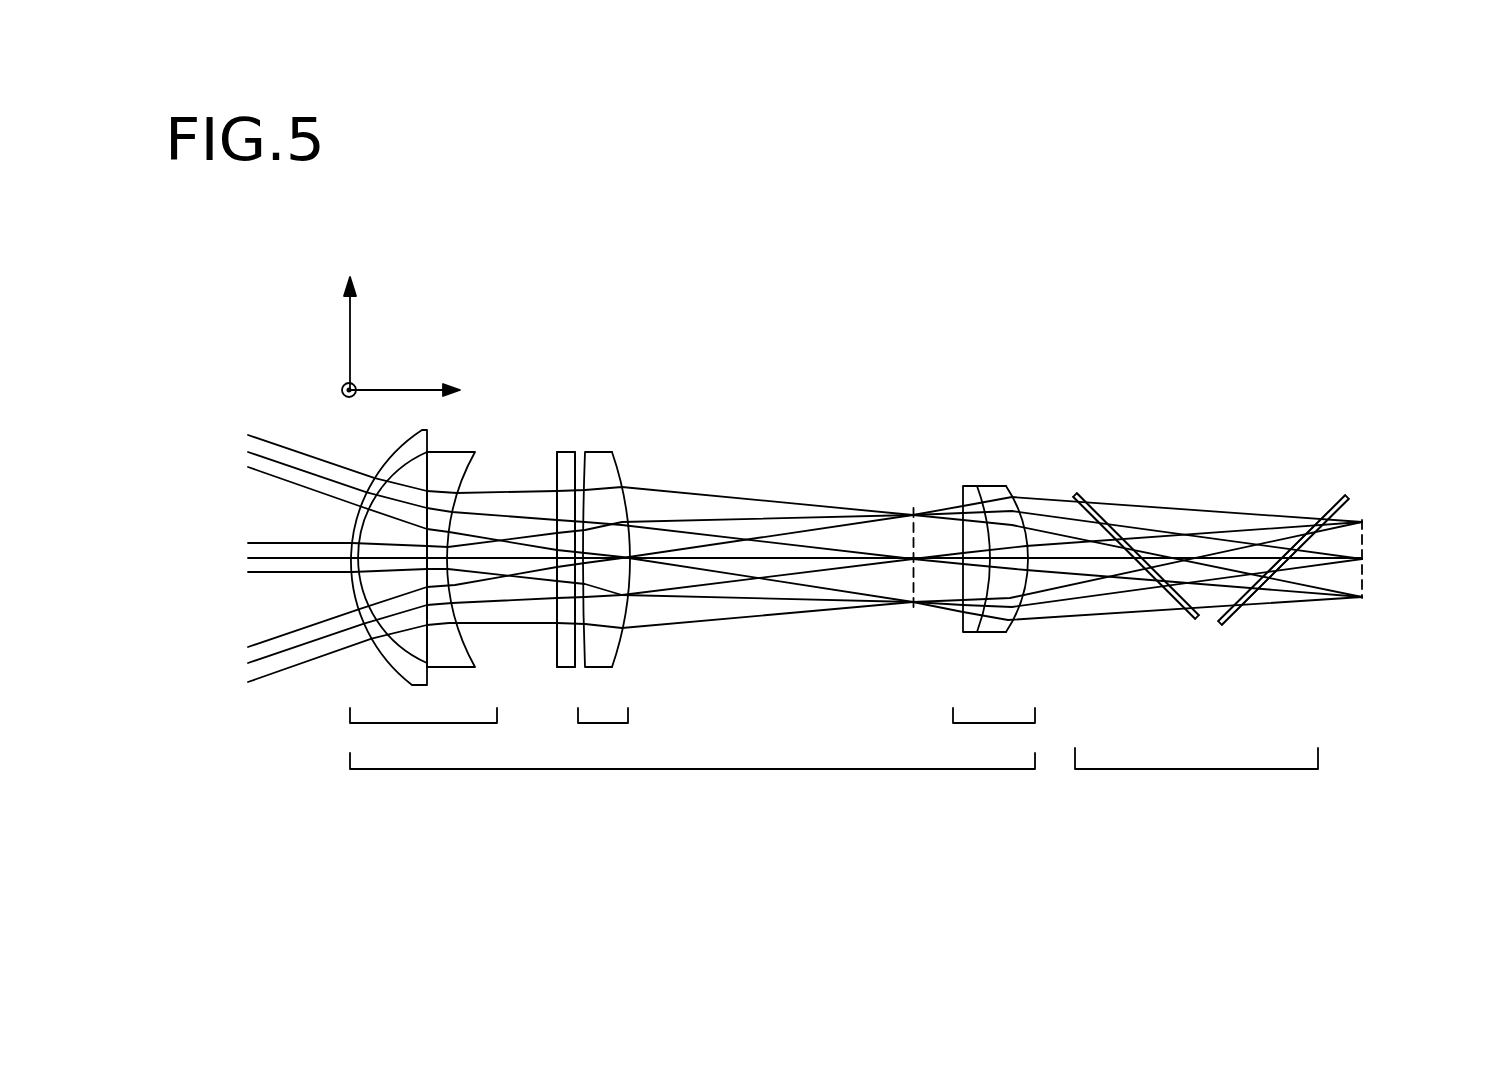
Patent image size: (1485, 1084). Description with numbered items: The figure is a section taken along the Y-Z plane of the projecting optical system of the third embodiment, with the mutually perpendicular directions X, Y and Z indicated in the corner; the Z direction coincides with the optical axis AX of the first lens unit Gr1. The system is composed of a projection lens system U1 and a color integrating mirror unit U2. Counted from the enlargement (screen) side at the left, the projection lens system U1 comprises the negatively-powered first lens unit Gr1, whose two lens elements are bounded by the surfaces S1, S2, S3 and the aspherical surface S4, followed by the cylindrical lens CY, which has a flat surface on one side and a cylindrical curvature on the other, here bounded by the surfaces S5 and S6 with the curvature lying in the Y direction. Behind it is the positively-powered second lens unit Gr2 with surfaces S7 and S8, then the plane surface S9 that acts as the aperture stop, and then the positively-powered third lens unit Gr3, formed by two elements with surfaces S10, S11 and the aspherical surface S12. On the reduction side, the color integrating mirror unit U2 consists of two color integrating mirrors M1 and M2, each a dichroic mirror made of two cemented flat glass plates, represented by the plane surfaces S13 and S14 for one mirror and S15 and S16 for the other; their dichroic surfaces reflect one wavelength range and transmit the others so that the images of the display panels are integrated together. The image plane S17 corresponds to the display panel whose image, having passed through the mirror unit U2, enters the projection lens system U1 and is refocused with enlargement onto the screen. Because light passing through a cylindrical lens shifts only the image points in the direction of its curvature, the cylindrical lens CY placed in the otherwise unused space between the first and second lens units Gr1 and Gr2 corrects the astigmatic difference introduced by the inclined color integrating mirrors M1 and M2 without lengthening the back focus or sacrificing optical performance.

The first surface S1 is at (393, 452).
The second surface S2 is at (433, 415).
The third surface S3 is at (430, 470).
The fourth surface (aspherical) S4 is at (462, 489).
The fifth surface S5 is at (556, 470).
The sixth surface S6 is at (578, 462).
The seventh surface S7 is at (590, 465).
The eighth surface S8 is at (619, 473).
The ninth surface (aperture stop) S9 is at (913, 610).
The tenth surface S10 is at (962, 500).
The eleventh surface S11 is at (980, 487).
The twelfth surface (aspherical) S12 is at (1010, 497).
The thirteenth surface S13 is at (1180, 615).
The fourteenth surface S14 is at (1078, 495).
The fifteenth surface S15 is at (1340, 496).
The sixteenth surface S16 is at (1232, 619).
The seventeenth surface (image plane) S17 is at (1362, 603).
The color integrating mirror M1 is at (1232, 622).
The color integrating mirror M2 is at (1193, 618).
The optical axis AX is at (291, 556).
The cylindrical lens CY is at (568, 668).
The first lens unit Gr1 is at (452, 515).
The second lens unit Gr2 is at (611, 541).
The third lens unit Gr3 is at (1007, 562).
The projection lens system U1 is at (720, 538).
The color integrating mirror unit U2 is at (1255, 613).
The X direction X is at (333, 390).
The Y direction Y is at (351, 311).
The Z direction Z is at (415, 373).